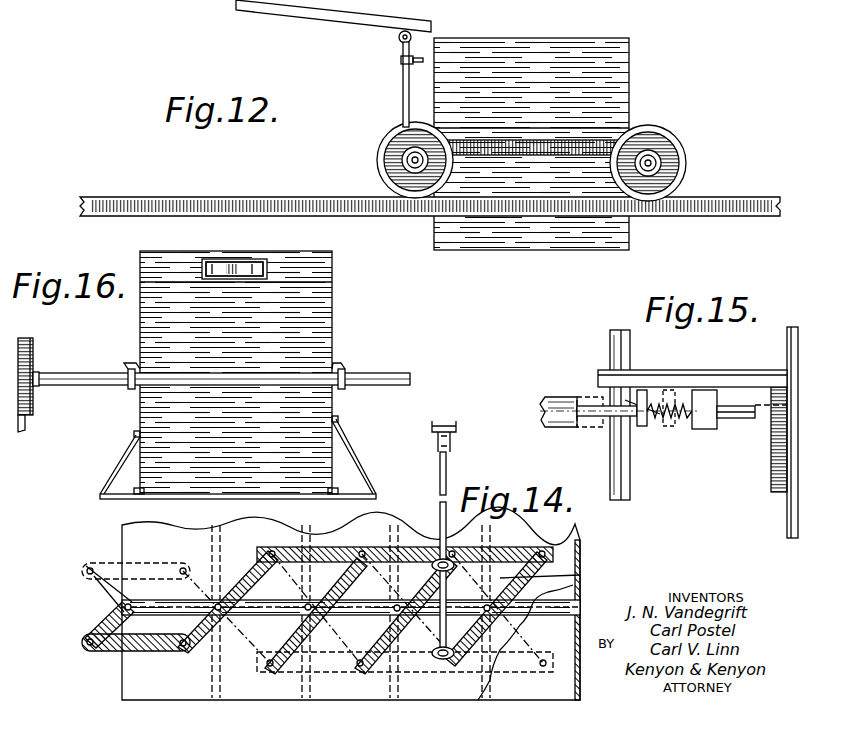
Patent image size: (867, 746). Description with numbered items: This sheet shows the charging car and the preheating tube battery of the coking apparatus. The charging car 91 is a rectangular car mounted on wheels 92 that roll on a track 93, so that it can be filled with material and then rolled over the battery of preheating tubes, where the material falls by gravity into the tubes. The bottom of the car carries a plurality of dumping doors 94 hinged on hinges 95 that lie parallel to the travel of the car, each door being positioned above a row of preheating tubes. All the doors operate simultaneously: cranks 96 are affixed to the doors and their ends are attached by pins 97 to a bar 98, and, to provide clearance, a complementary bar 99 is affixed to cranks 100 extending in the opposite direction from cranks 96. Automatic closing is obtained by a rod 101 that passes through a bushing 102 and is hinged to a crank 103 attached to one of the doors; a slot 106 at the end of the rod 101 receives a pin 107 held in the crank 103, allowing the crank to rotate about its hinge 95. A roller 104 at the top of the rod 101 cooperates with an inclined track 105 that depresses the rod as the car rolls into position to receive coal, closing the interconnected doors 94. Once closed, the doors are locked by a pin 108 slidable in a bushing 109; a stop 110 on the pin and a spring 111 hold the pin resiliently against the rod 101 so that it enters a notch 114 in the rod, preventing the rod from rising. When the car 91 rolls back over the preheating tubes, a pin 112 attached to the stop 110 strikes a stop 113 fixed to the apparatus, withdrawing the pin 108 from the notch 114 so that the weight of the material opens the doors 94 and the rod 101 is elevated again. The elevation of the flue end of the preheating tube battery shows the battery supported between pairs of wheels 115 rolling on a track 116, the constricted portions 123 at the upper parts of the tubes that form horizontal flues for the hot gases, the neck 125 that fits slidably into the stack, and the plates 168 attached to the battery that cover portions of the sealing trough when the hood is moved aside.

In FIG. 12, the charging car 91 is at (629, 70).
In FIG. 12, the wheels 92 is at (683, 150).
In FIG. 12, the track 93 is at (735, 185).
In FIG. 14, the dumping doors 94 is at (580, 596).
In FIG. 14, the hinges 95 is at (508, 640).
In FIG. 14, the cranks 96 is at (580, 575).
In FIG. 14, the pins 97 is at (365, 547).
In FIG. 14, the bar 98 is at (290, 672).
In FIG. 14, the complementary bar 99 is at (110, 568).
In FIG. 14, the cranks 100 is at (120, 608).
In FIG. 12, the rod 101 is at (403, 108).
In FIG. 15, the rod 101 is at (630, 488).
In FIG. 14, the rod 101 is at (446, 470).
In FIG. 15, the bushing 102 is at (598, 378).
In FIG. 14, the crank 103 is at (486, 660).
In FIG. 14, the roller 104 is at (450, 440).
In FIG. 12, the inclined track 105 is at (425, 18).
In FIG. 14, the inclined track 105 is at (456, 424).
In FIG. 14, the slot 106 is at (410, 648).
In FIG. 14, the pin 107 is at (443, 660).
In FIG. 15, the pin 108 is at (738, 406).
In FIG. 15, the bushing 109 is at (710, 430).
In FIG. 15, the stop 110 is at (647, 424).
In FIG. 15, the spring 111 is at (672, 426).
In FIG. 15, the pin 112 is at (590, 430).
In FIG. 15, the stop 113 is at (552, 397).
In FIG. 15, the notch 114 is at (640, 398).
In FIG. 16, the wheels 115 is at (30, 338).
In FIG. 16, the track 116 is at (22, 432).
In FIG. 16, the constricted portions 123 is at (214, 262).
In FIG. 16, the neck 125 is at (248, 280).
In FIG. 16, the plates 168 is at (108, 500).